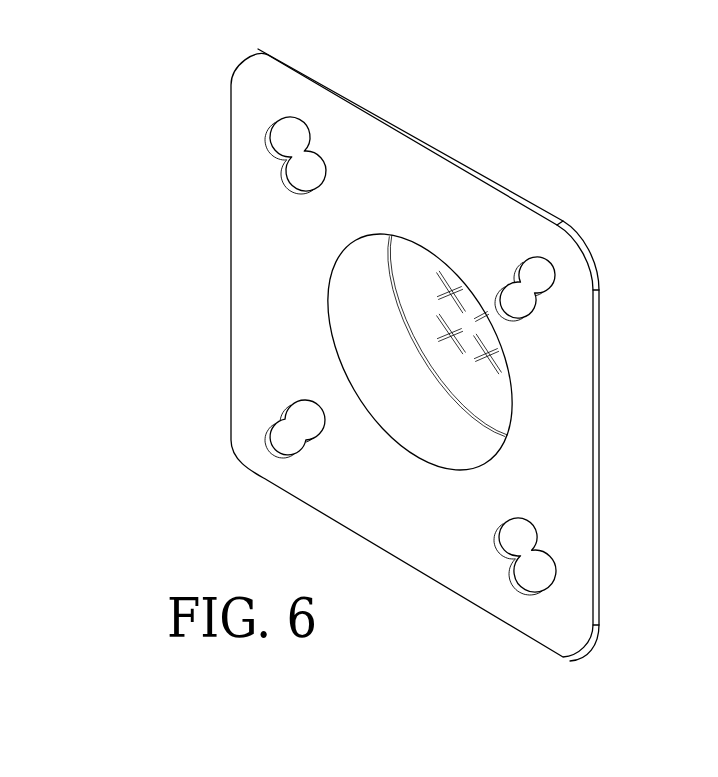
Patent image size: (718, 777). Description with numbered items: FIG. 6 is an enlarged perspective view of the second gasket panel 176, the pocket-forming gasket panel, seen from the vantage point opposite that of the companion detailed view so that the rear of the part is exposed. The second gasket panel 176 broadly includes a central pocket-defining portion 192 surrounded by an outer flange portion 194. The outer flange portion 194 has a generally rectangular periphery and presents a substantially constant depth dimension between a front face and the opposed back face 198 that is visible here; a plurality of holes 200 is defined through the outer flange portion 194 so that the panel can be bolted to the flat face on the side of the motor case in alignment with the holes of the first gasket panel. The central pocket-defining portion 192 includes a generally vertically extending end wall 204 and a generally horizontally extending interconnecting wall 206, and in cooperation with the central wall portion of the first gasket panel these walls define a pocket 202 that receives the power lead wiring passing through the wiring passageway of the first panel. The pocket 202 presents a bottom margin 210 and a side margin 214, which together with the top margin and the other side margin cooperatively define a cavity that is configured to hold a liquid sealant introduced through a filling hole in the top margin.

The second gasket panel 176 is at (200, 545).
The outer flange portion 194 is at (545, 498).
The back face 198 is at (318, 215).
The holes 200 is at (290, 145).
The central pocket-defining portion 192 is at (345, 279).
The side margin 214 is at (352, 334).
The end wall 204 is at (491, 388).
The interconnecting wall 206 is at (382, 375).
The pocket 202 is at (400, 419).
The bottom margin 210 is at (446, 455).